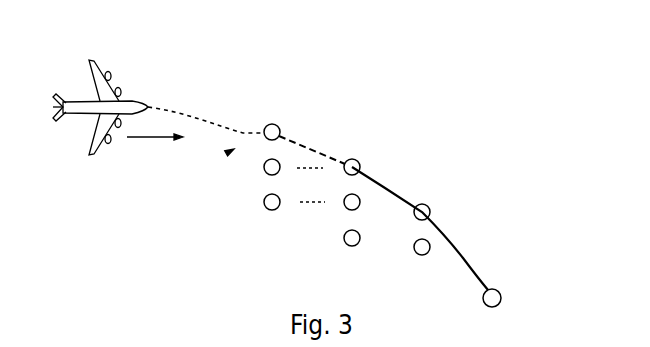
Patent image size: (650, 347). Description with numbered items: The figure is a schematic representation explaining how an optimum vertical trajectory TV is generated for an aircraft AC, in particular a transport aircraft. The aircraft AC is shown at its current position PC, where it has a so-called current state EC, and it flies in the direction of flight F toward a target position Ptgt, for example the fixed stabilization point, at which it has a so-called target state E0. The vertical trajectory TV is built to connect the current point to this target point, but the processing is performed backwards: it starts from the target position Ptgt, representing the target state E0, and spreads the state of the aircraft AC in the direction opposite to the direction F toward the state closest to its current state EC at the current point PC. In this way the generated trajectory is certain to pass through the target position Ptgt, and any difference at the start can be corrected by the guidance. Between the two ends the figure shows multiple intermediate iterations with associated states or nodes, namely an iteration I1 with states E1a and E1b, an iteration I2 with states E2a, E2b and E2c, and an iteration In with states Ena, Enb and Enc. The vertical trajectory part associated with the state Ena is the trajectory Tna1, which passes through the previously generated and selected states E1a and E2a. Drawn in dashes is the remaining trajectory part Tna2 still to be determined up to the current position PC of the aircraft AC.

The aircraft AC is at (122, 101).
The current state EC is at (125, 67).
The current position PC is at (83, 134).
The direction of flight F is at (147, 139).
The vertical trajectory TV is at (230, 152).
The remaining trajectory part Tna2 is at (212, 112).
The trajectory Tna1 is at (386, 173).
The iteration In is at (324, 56).
The iteration I2 is at (391, 85).
The iteration I1 is at (511, 161).
The target state E0 is at (500, 276).
The state Ena is at (276, 124).
The state Enb is at (266, 174).
The state Enc is at (265, 209).
The state E2a is at (355, 159).
The state E2b is at (345, 208).
The state E2c is at (346, 246).
The state E1a is at (427, 204).
The state E1b is at (414, 255).
The target position Ptgt is at (501, 294).